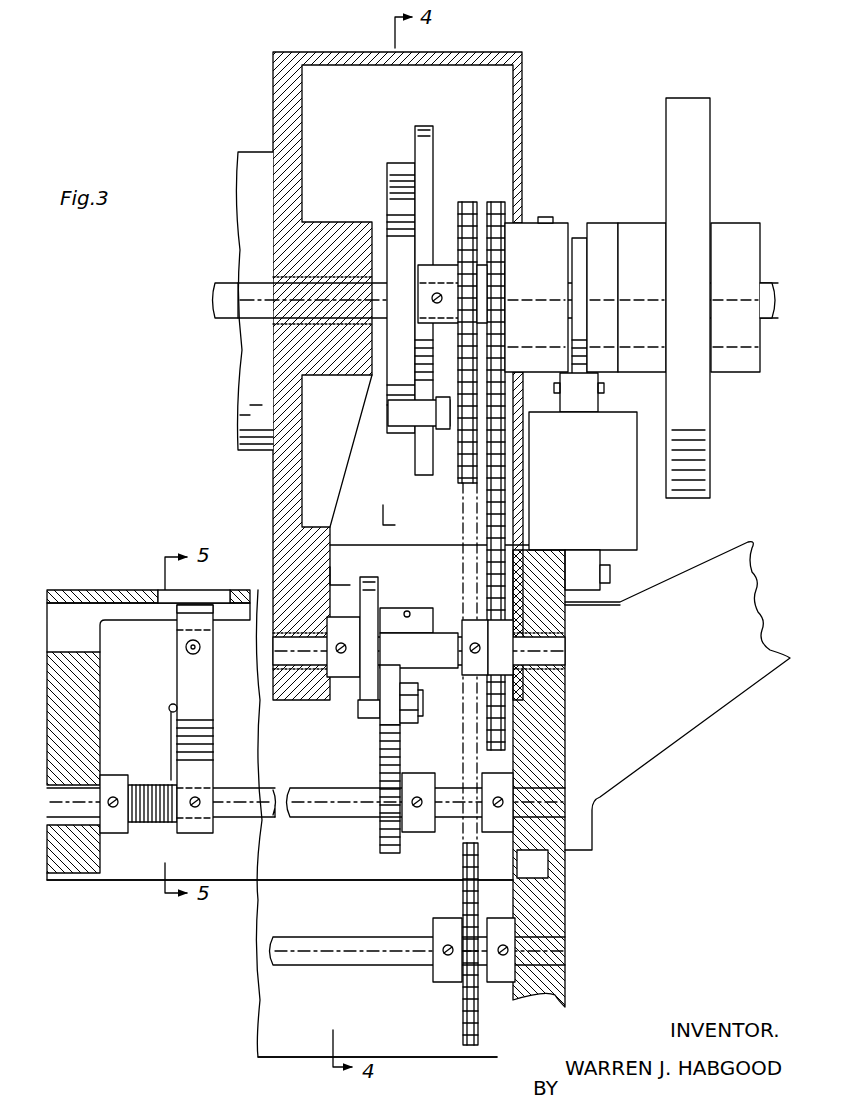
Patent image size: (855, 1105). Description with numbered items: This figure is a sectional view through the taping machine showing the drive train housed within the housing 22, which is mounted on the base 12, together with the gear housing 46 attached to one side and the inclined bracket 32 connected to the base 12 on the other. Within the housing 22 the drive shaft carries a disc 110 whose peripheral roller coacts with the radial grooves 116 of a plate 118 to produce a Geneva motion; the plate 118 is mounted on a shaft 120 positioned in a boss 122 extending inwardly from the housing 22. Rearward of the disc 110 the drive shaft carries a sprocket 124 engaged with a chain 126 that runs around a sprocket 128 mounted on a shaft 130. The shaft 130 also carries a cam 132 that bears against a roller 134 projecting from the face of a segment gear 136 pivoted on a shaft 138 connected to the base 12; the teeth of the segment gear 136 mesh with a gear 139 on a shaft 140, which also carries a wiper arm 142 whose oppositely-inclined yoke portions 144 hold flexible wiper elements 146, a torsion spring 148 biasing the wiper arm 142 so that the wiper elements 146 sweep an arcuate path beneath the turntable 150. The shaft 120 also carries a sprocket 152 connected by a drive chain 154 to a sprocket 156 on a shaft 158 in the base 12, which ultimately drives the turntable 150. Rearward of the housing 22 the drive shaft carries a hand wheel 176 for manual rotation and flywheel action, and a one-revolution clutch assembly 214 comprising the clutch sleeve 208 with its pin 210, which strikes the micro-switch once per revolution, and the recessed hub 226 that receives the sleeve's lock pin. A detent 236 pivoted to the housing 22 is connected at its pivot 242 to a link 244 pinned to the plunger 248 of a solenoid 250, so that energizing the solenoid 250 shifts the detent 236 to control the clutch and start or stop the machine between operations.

The base 12 is at (555, 920).
The housing 22 is at (455, 52).
The inclined bracket 32 is at (664, 755).
The gear housing 46 is at (256, 448).
The disc 110 is at (428, 165).
The radial grooves 116 is at (402, 178).
The plate 118 is at (390, 222).
The shaft 120 is at (328, 335).
The boss 122 is at (322, 222).
The sprocket 124 is at (518, 222).
The chain 126 is at (513, 505).
The sprocket 128 is at (513, 660).
The shaft 130 is at (428, 718).
The cam 132 is at (372, 612).
The roller 134 is at (357, 710).
The segment gear 136 is at (385, 720).
The shaft 138 is at (438, 624).
The gear 139 is at (397, 768).
The shaft 140 is at (345, 812).
The wiper arm 142 is at (186, 772).
The yoke portions 144 is at (185, 678).
The flexible wiper elements 146 is at (203, 610).
The torsion spring 148 is at (165, 595).
The turntable 150 is at (95, 592).
The sprocket 152 is at (460, 228).
The drive chain 154 is at (462, 890).
The sprocket 156 is at (462, 985).
The shaft 158 is at (360, 940).
The hand wheel 176 is at (706, 183).
The clutch sleeve 208 is at (597, 232).
The pin 210 is at (548, 218).
The one-revolution clutch assembly 214 is at (646, 569).
The hub 226 is at (633, 233).
The detent 236 is at (572, 363).
The pivotal connection 242 is at (602, 388).
The link 244 is at (592, 410).
The plunger 248 is at (598, 560).
The solenoid 250 is at (678, 538).